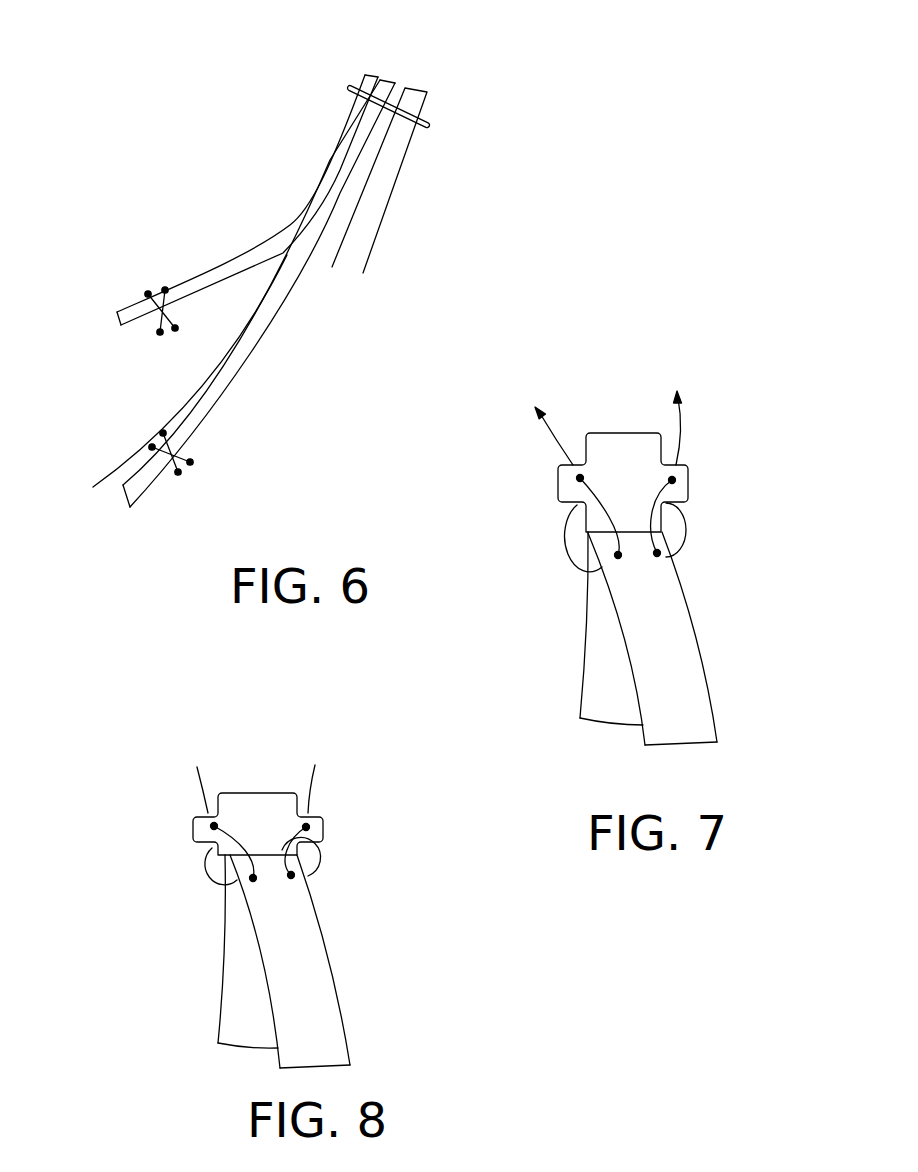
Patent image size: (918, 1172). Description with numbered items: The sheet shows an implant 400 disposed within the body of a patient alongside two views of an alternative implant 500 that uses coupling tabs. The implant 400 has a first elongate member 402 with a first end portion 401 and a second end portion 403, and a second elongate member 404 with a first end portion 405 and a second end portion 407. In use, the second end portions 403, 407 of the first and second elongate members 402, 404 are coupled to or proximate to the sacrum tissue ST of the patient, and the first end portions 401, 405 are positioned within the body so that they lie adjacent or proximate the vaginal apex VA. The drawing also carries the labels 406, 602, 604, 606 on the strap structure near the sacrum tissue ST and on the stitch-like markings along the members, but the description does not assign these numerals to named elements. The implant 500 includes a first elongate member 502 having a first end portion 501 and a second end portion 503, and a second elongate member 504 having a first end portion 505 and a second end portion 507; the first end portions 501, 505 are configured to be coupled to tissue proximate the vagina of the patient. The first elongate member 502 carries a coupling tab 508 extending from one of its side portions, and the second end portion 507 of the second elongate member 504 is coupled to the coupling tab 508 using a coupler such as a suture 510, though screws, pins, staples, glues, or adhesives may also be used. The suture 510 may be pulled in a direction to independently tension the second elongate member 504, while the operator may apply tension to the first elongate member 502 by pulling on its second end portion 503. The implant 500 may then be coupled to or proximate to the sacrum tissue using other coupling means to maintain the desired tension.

In FIG. 6, the implant 400 is at (201, 108).
In FIG. 6, the first end portion 401 is at (138, 487).
In FIG. 6, the first elongate member 402 is at (212, 409).
In FIG. 6, the second end portion 403 is at (363, 77).
In FIG. 6, the second elongate member 404 is at (193, 292).
In FIG. 6, the first end portion 405 is at (128, 315).
In FIG. 6, the strap portion 406 is at (323, 227).
In FIG. 6, the second end portion 407 is at (385, 86).
In FIG. 6, the stitching 602 is at (182, 452).
In FIG. 6, the stitching 604 is at (146, 291).
In FIG. 6, the support rod 606 is at (350, 92).
In FIG. 6, the sacrum tissue ST is at (410, 152).
In FIG. 6, the vaginal apex VA is at (275, 280).
In FIG. 7, the implant 500 is at (620, 338).
In FIG. 7, the first end portion 501 is at (597, 708).
In FIG. 8, the first end portion 501 is at (232, 1032).
In FIG. 7, the first elongate member 502 is at (608, 653).
In FIG. 8, the first elongate member 502 is at (243, 977).
In FIG. 7, the second end portion 503 is at (597, 577).
In FIG. 8, the second end portion 503 is at (207, 850).
In FIG. 7, the second elongate member 504 is at (693, 653).
In FIG. 8, the second elongate member 504 is at (330, 978).
In FIG. 7, the first end portion 505 is at (715, 736).
In FIG. 8, the first end portion 505 is at (350, 1057).
In FIG. 7, the second end portion 507 is at (655, 560).
In FIG. 8, the second end portion 507 is at (287, 882).
In FIG. 7, the coupling tab 508 is at (690, 471).
In FIG. 8, the coupling tab 508 is at (200, 838).
In FIG. 7, the suture 510 is at (583, 480).
In FIG. 8, the suture 510 is at (310, 792).